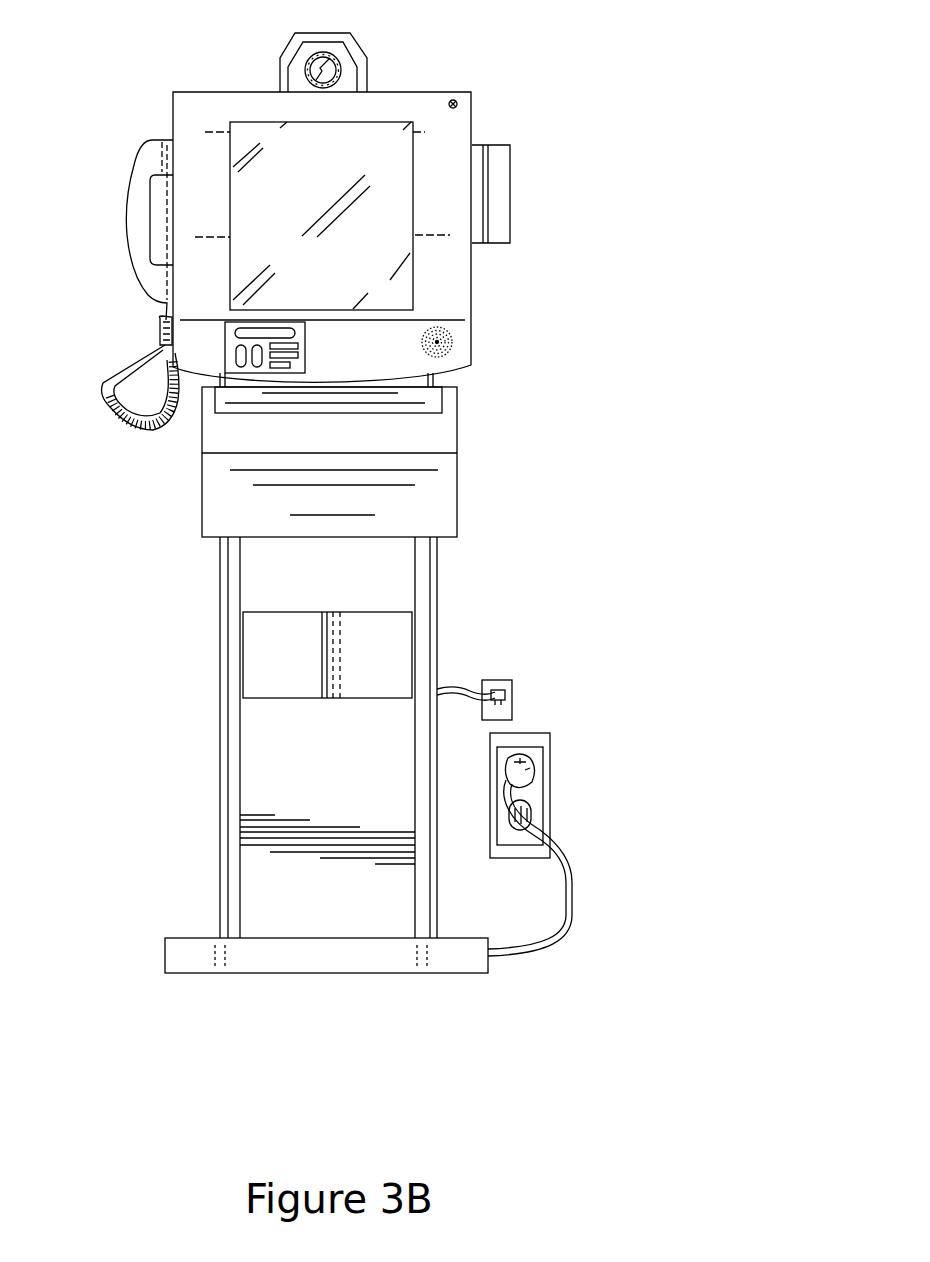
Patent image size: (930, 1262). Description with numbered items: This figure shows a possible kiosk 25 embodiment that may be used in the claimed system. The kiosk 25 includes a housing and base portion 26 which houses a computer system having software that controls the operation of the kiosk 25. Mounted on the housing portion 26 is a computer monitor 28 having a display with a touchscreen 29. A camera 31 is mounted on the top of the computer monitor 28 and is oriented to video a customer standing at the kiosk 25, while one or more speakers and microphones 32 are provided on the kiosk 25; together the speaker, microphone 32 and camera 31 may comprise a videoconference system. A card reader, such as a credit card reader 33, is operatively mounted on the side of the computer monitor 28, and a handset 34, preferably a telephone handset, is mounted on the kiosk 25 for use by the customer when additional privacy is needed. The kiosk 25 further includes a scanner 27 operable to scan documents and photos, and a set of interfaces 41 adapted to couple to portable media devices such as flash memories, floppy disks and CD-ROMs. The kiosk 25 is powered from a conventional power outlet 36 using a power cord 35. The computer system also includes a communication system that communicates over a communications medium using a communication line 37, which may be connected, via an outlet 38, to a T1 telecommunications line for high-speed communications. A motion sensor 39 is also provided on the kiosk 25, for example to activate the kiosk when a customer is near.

The kiosk 25 is at (530, 88).
The housing and base portion 26 is at (248, 572).
The scanner 27 is at (438, 442).
The computer monitor 28 is at (198, 104).
The touchscreen 29 is at (398, 288).
The camera 31 is at (325, 33).
The speakers and microphones 32 is at (452, 343).
The credit card reader 33 is at (510, 178).
The handset 34 is at (135, 263).
The power cord 35 is at (552, 945).
The power outlet 36 is at (553, 765).
The communication line 37 is at (450, 693).
The outlet 38 is at (512, 686).
The motion sensor 39 is at (453, 99).
The set of interfaces 41 is at (178, 366).